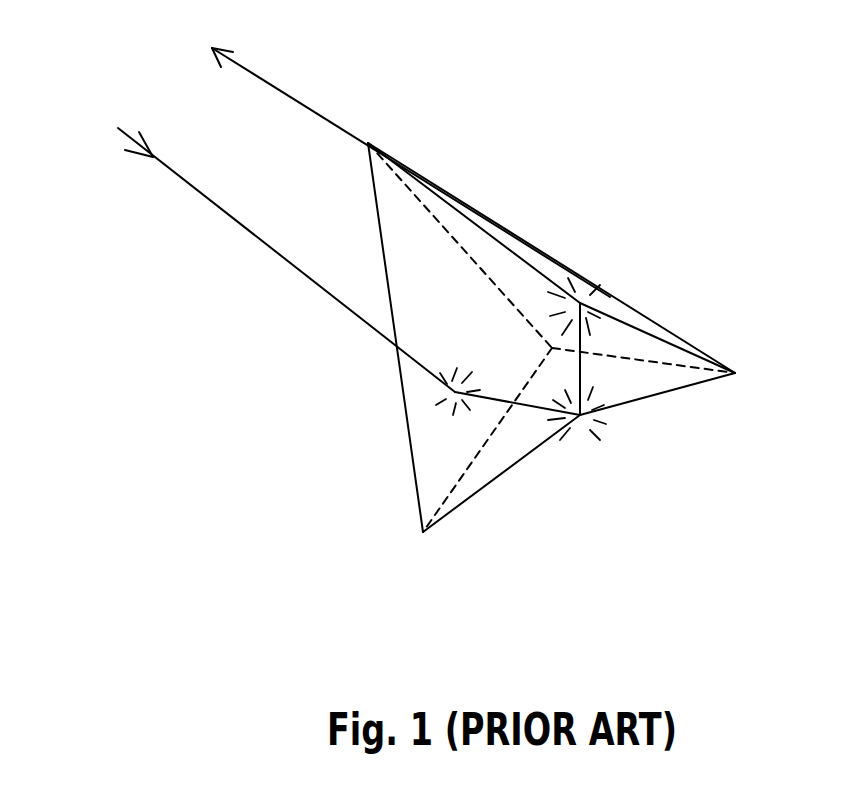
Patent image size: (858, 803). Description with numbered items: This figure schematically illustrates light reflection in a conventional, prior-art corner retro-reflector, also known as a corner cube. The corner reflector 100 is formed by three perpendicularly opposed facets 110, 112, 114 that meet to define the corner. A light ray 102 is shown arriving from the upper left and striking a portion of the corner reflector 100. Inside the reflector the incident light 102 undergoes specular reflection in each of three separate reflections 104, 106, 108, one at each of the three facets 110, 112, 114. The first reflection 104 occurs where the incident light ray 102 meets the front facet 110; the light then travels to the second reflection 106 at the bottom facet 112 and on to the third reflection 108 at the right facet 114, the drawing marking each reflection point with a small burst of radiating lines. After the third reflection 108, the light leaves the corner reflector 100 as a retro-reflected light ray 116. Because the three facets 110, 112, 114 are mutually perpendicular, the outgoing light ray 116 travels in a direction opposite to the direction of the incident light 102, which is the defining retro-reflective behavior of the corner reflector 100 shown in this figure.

The corner reflector 100 is at (557, 172).
The incident light ray 102 is at (225, 213).
The first reflection 104 is at (437, 390).
The second reflection 106 is at (593, 430).
The third reflection 108 is at (598, 300).
The first facet 110 is at (422, 285).
The second facet 112 is at (503, 473).
The third facet 114 is at (655, 340).
The retro-reflected light ray 116 is at (312, 112).